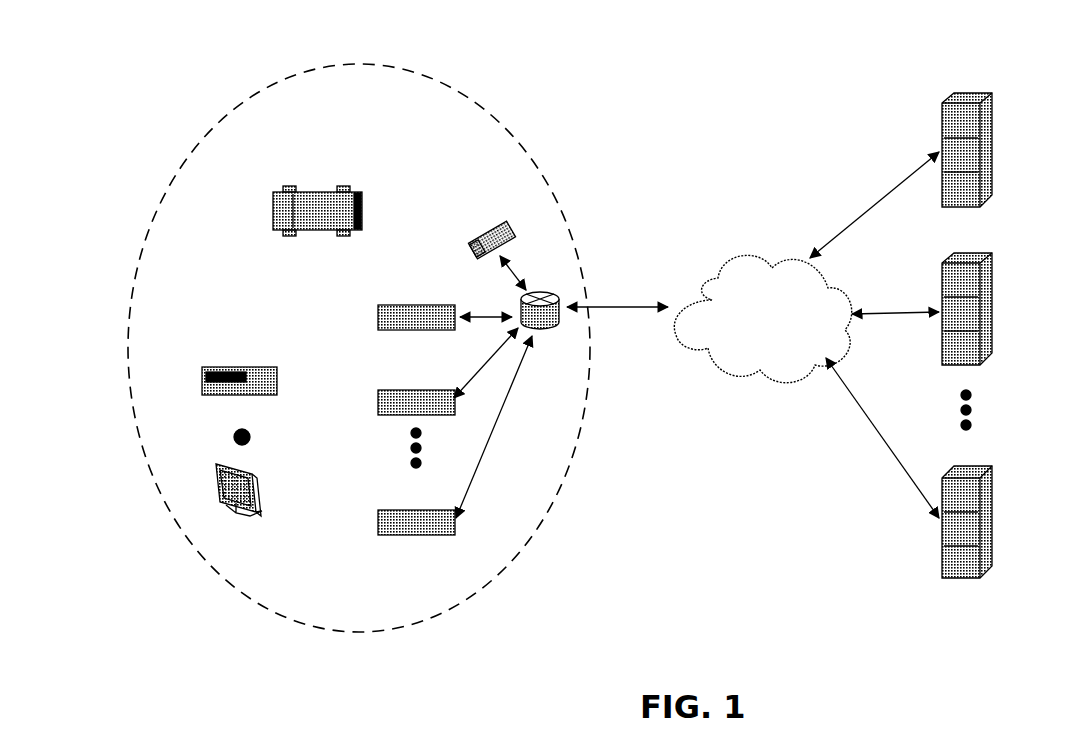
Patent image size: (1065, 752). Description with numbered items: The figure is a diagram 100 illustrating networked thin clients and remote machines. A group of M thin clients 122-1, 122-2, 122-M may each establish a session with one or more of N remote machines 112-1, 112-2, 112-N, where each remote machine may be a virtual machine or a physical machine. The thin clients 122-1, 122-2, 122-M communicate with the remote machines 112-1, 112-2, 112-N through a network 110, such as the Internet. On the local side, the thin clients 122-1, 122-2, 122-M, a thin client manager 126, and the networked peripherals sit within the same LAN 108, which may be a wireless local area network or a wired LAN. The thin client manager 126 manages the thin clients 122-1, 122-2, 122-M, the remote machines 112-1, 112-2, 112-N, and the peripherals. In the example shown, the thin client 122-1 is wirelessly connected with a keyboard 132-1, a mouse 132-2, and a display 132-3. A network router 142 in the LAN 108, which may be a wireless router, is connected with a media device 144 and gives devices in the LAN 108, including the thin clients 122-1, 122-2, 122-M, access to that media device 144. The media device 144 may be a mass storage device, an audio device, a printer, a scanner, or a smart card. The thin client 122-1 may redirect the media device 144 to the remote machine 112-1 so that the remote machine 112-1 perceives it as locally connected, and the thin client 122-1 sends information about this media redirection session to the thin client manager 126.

The diagram 100 is at (95, 54).
The LAN 108 is at (496, 126).
The network 110 is at (748, 260).
The remote machine 112-1 is at (994, 121).
The remote machine 112-2 is at (994, 295).
The remote machine 112-N is at (994, 515).
The thin client 122-1 is at (395, 305).
The thin client 122-2 is at (395, 390).
The thin client 122-M is at (395, 510).
The thin client manager 126 is at (364, 212).
The keyboard 132-1 is at (279, 381).
The mouse 132-2 is at (251, 437).
The display 132-3 is at (262, 494).
The network router 142 is at (541, 291).
The media device 144 is at (513, 232).